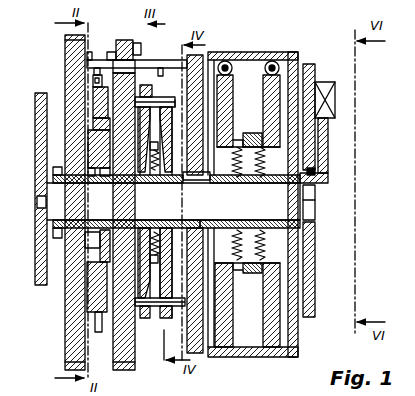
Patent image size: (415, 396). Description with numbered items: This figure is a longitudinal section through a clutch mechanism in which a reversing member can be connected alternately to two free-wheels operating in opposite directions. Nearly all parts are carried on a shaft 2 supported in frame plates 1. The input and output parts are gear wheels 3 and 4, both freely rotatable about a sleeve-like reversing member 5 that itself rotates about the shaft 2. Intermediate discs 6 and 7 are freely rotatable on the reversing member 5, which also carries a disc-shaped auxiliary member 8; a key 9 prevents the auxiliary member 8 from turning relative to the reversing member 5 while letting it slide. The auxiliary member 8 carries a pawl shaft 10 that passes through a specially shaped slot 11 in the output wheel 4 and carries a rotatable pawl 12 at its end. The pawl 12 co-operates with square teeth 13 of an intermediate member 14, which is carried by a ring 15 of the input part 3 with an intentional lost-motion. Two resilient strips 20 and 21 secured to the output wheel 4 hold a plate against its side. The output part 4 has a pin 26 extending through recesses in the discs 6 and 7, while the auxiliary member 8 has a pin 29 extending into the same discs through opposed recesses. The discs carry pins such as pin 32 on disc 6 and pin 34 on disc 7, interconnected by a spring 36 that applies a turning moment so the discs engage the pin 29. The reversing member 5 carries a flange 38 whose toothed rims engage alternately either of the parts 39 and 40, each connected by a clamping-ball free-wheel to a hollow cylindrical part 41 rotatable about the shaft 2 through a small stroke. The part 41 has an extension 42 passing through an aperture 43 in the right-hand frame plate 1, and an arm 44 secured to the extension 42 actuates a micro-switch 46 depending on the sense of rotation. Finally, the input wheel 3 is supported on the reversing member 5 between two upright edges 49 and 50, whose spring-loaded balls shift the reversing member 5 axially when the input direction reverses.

The frame plates 1 is at (36, 258).
The shaft 2 is at (60, 205).
The input gear wheel 3 is at (70, 64).
The output gear wheel 4 is at (112, 52).
The reversing member 5 is at (282, 222).
The intermediate disc 6 is at (146, 92).
The intermediate disc 7 is at (168, 310).
The auxiliary member 8 is at (208, 54).
The key 9 is at (195, 181).
The pawl shaft 10 is at (150, 97).
The slot 11 is at (125, 56).
The pawl 12 is at (90, 58).
The square teeth 13 is at (93, 80).
The intermediate member 14 is at (100, 103).
The ring 15 is at (98, 147).
The resilient strip 20 is at (145, 60).
The resilient strip 21 is at (138, 90).
The pin 26 is at (158, 115).
The pin 29 is at (135, 305).
The pin 32 is at (205, 128).
The pin 34 is at (148, 306).
The spring 36 is at (160, 232).
The flange 38 is at (252, 270).
The free-wheel part 39 is at (273, 80).
The free-wheel part 40 is at (230, 335).
The hollow cylindrical part 41 is at (298, 330).
The extension 42 is at (315, 196).
The aperture 43 is at (316, 172).
The arm 44 is at (329, 140).
The micro-switch 46 is at (336, 96).
The upright edge 49 is at (50, 232).
The upright edge 50 is at (100, 227).